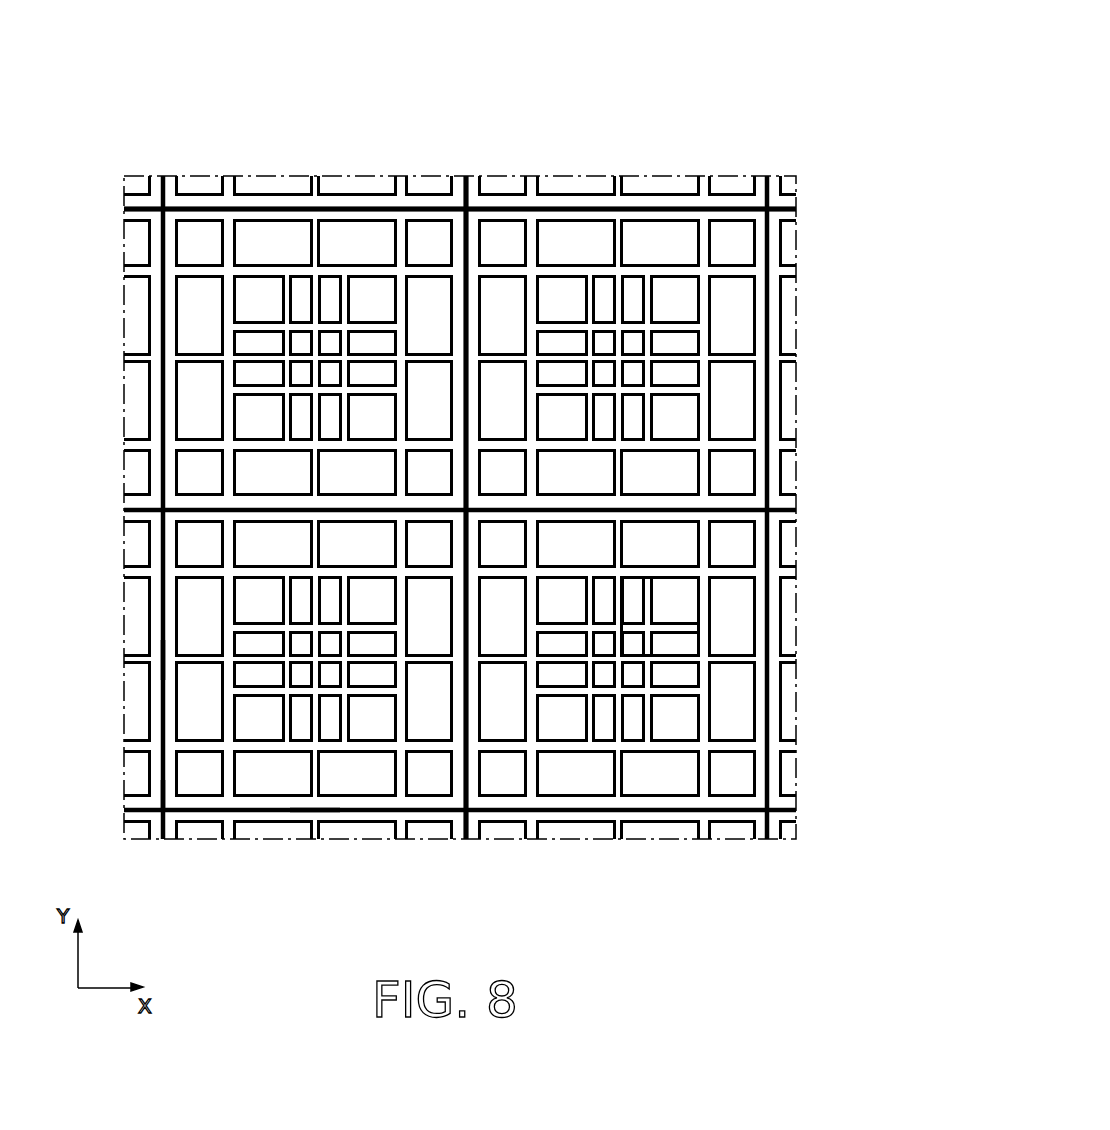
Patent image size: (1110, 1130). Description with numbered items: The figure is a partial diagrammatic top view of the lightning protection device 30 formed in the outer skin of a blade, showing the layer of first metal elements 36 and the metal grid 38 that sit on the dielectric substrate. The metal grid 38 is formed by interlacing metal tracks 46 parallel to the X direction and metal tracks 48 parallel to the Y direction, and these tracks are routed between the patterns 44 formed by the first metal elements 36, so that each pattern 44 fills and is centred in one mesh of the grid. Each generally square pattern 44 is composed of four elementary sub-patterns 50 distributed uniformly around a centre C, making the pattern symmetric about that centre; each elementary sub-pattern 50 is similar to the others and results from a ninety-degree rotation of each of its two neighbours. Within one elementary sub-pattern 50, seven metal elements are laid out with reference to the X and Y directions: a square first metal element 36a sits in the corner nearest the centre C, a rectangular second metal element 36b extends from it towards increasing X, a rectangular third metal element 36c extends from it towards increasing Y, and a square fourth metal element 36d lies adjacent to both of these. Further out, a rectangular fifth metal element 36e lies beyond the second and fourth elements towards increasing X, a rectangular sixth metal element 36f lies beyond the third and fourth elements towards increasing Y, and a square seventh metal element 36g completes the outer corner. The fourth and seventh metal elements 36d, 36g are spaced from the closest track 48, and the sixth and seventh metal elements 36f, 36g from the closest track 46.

The lightning protection device 30 is at (753, 132).
The first metal elements 36 is at (205, 240).
The first metal element 36a is at (635, 642).
The second metal element 36b is at (687, 645).
The third metal element 36c is at (627, 600).
The fourth metal element 36d is at (682, 611).
The fifth metal element 36e is at (742, 637).
The sixth metal element 36f is at (680, 538).
The seventh metal element 36g is at (742, 547).
The metal grid 38 is at (468, 123).
The pattern 44 is at (175, 500).
The metal track 46 is at (385, 208).
The metal track 48 is at (459, 190).
The elementary sub-pattern 50 is at (172, 661).
The centre c is at (315, 358).